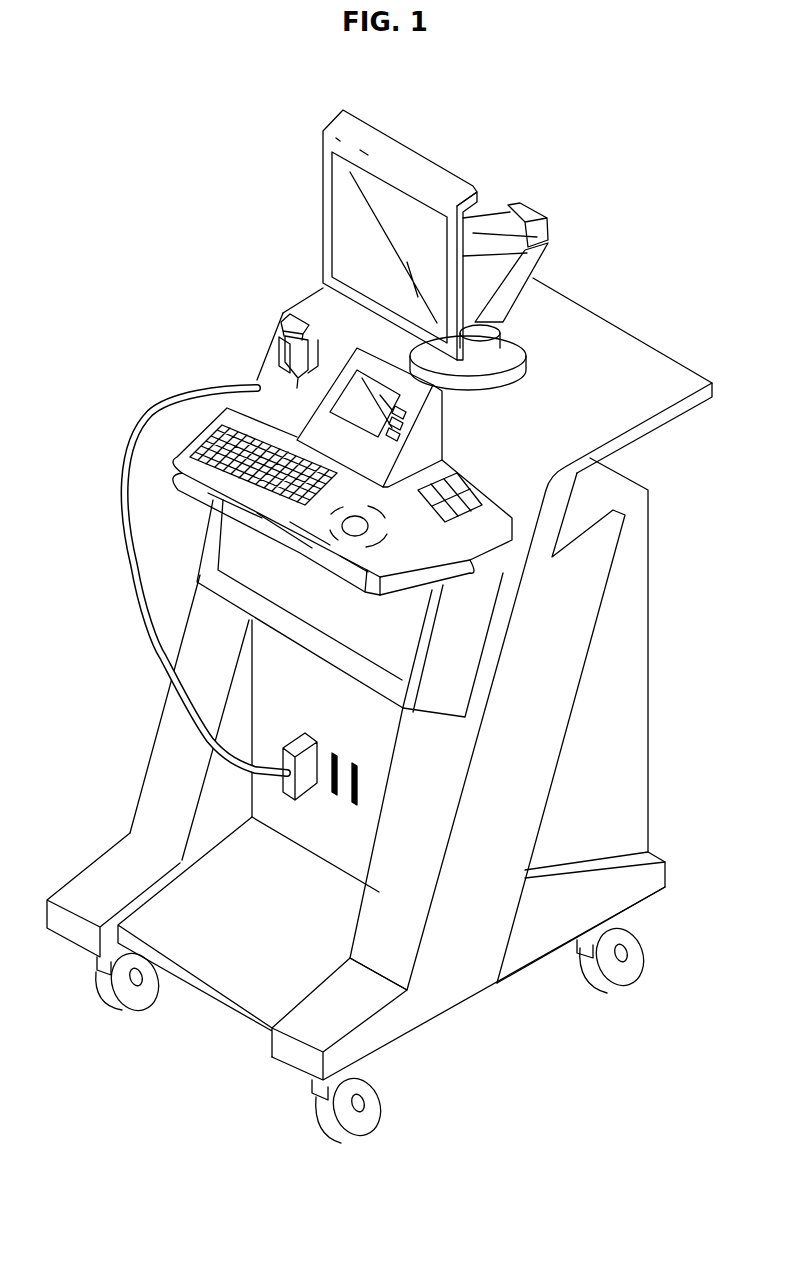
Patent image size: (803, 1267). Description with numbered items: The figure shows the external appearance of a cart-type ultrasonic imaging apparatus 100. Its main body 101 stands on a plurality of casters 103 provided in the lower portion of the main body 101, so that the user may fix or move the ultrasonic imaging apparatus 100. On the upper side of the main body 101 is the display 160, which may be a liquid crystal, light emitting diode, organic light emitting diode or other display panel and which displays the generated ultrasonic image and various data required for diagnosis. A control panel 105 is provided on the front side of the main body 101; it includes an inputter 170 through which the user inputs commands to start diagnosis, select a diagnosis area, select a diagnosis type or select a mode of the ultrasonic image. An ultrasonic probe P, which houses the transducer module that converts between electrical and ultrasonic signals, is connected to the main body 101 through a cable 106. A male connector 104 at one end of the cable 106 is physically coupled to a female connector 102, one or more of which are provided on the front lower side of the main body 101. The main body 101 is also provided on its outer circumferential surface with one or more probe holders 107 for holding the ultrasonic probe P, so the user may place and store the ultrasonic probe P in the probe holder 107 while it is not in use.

The ultrasonic imaging apparatus 100 is at (150, 94).
The main body 101 is at (620, 768).
The female connector 102 is at (353, 797).
The casters 103 is at (322, 1122).
The male connector 104 is at (290, 788).
The control panel 105 is at (452, 573).
The cable 106 is at (162, 660).
The probe holder 107 is at (280, 348).
The display 160 is at (375, 182).
The inputter 170 is at (200, 450).
The ultrasonic probe P is at (282, 313).